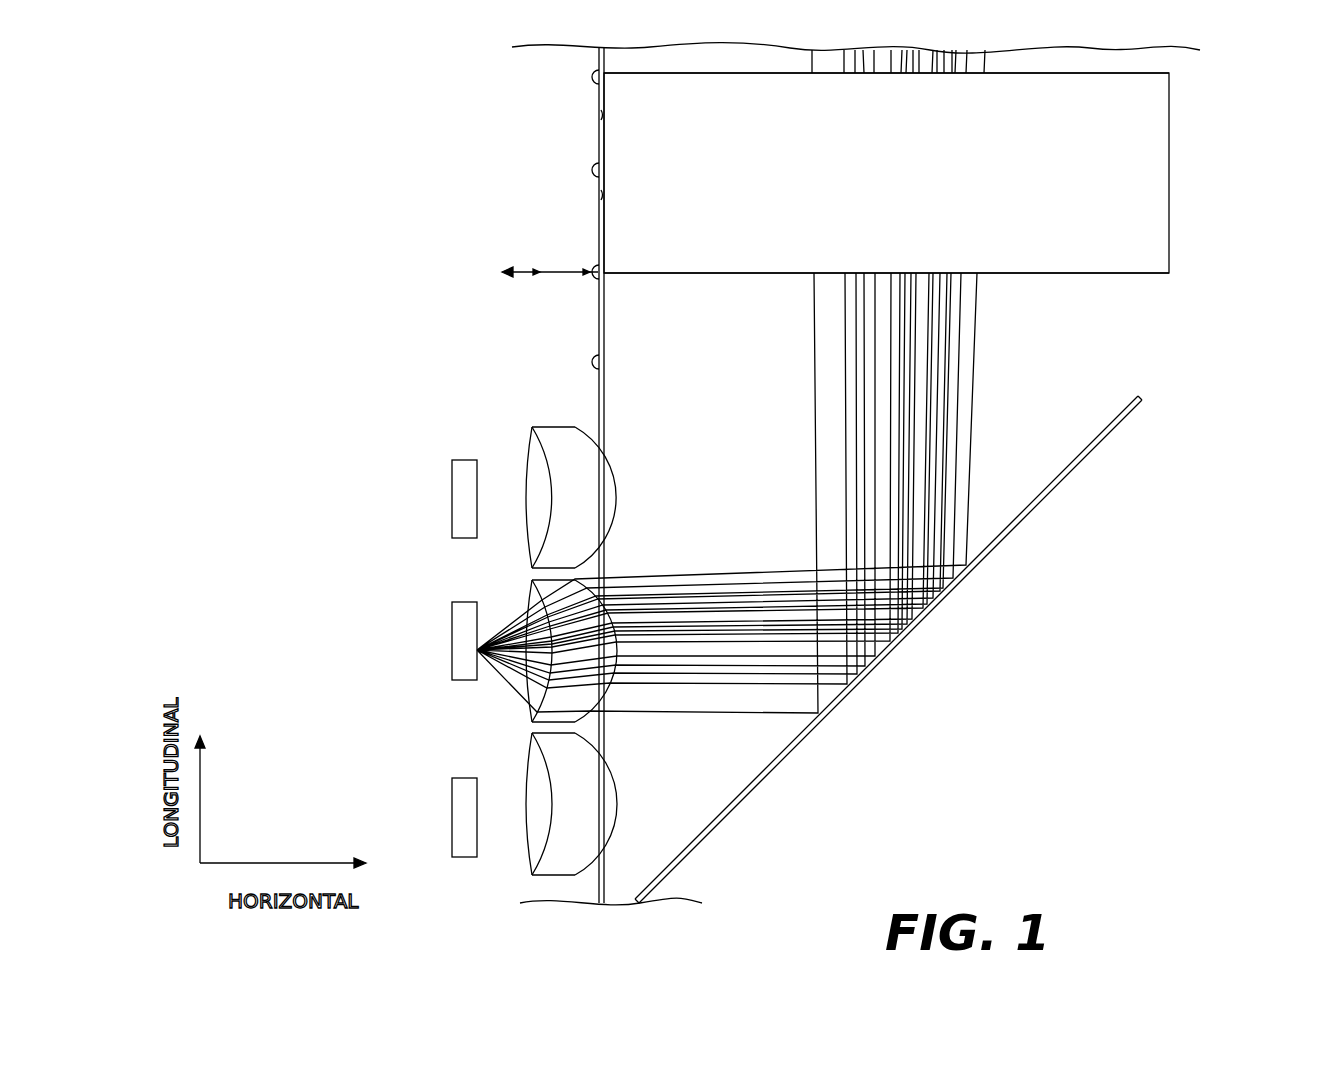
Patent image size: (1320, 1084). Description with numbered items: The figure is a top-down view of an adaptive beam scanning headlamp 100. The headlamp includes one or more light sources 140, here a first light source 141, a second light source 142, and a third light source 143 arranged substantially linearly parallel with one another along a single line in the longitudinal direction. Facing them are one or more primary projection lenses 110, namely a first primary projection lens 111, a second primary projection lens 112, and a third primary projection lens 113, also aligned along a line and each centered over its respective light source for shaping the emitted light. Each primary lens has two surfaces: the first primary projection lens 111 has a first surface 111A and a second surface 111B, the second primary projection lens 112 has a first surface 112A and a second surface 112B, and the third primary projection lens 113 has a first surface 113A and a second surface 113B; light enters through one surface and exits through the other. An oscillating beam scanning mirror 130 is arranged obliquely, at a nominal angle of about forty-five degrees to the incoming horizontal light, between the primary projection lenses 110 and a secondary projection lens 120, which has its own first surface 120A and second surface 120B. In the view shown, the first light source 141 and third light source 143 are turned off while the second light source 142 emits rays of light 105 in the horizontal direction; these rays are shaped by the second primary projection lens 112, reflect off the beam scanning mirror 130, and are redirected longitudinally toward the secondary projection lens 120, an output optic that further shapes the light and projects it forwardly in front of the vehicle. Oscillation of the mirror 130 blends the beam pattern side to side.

The adaptive beam scanning headlamp 100 is at (284, 116).
The rays of light 105 is at (796, 550).
The primary projection lenses 110 is at (560, 897).
The first primary projection lens 111 is at (584, 479).
The first surface 111A is at (530, 455).
The second surface 111B is at (618, 497).
The second primary projection lens 112 is at (575, 645).
The first surface 112A is at (530, 682).
The second surface 112B is at (595, 680).
The third primary projection lens 113 is at (608, 802).
The first surface 113A is at (532, 790).
The second surface 113B is at (605, 812).
The secondary projection lens 120 is at (933, 206).
The first surface 120A is at (1058, 275).
The second surface 120B is at (1090, 72).
The oscillating beam scanning mirror 130 is at (1082, 455).
The light sources 140 is at (432, 707).
The first light source 141 is at (452, 470).
The second light source 142 is at (452, 612).
The third light source 143 is at (452, 790).